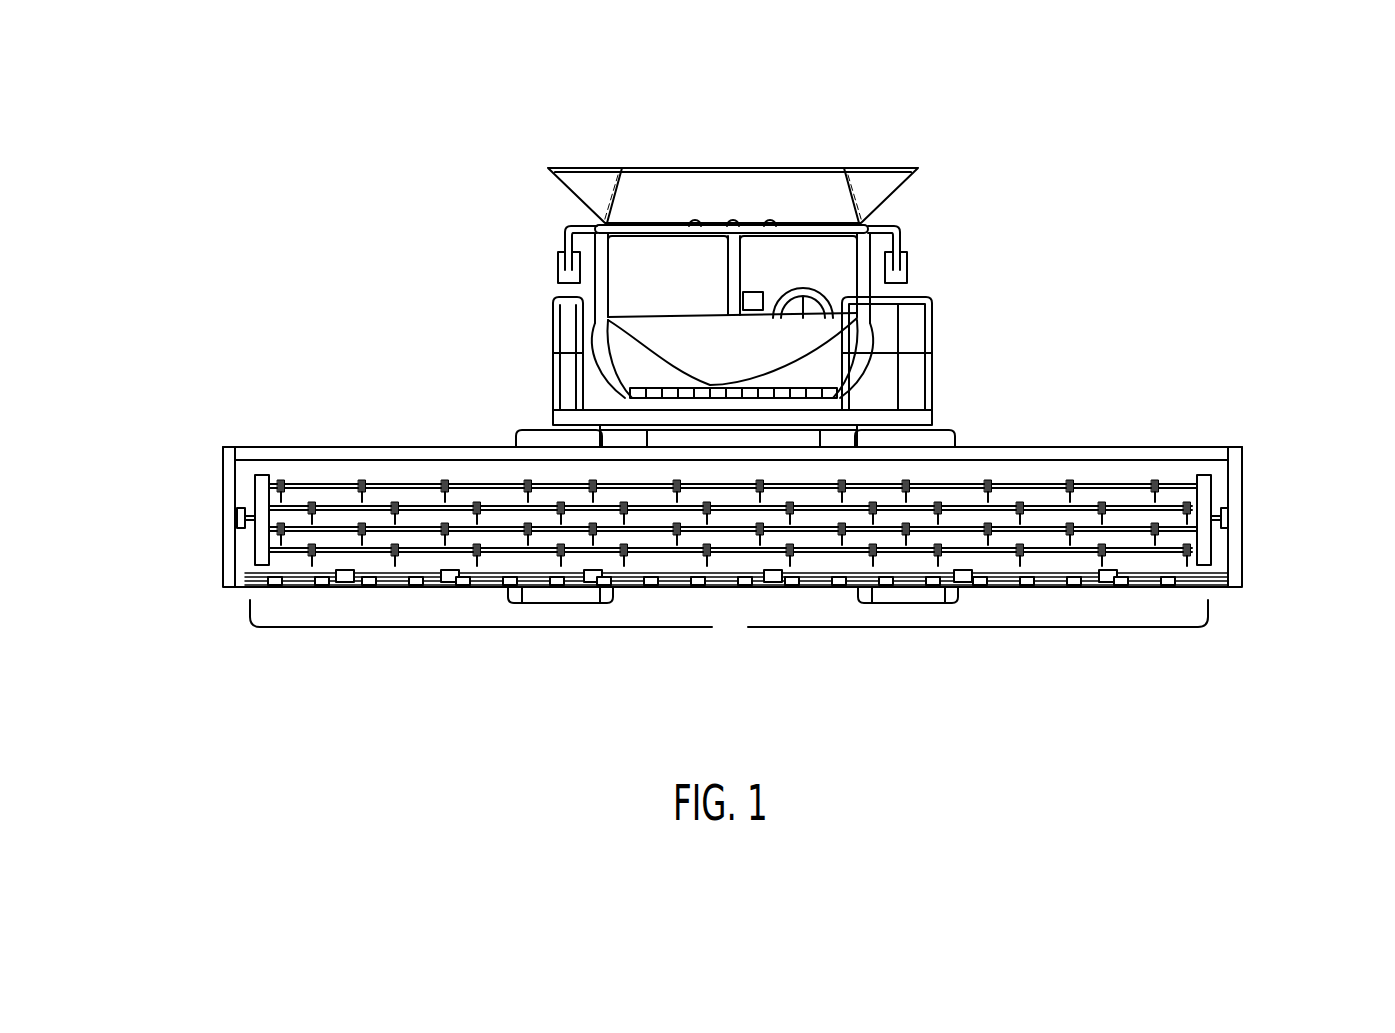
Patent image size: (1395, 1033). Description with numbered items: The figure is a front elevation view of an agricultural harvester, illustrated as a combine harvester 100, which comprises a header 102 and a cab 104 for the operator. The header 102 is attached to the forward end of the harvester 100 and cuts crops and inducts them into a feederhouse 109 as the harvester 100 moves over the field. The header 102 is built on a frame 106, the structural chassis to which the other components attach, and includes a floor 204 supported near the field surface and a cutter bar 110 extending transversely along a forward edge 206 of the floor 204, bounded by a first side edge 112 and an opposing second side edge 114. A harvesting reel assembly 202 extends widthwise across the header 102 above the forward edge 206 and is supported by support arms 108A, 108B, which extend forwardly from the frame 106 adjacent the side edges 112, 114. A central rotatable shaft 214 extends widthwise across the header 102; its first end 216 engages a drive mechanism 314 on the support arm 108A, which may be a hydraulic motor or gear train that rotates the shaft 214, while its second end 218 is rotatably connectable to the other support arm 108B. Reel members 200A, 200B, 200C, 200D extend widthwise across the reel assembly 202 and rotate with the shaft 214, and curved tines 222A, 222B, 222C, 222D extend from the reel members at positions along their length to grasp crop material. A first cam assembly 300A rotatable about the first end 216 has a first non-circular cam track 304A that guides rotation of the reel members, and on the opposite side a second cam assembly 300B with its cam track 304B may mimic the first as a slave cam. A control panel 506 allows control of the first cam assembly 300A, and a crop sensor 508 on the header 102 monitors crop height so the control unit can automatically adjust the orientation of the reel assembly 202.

The combine harvester 100 is at (390, 194).
The header 102 is at (1218, 415).
The cab 104 is at (863, 250).
The frame 106 is at (1104, 447).
The support arm 108A is at (222, 522).
The support arm 108B is at (1228, 512).
The feederhouse 109 is at (783, 438).
The cutter bar 110 is at (748, 627).
The first side edge 112 is at (222, 452).
The second side edge 114 is at (1242, 452).
The reel member 200A is at (362, 480).
The reel member 200B is at (410, 504).
The reel member 200C is at (388, 530).
The reel member 200D is at (407, 553).
The harvesting reel assembly 202 is at (1145, 582).
The floor 204 is at (860, 552).
The forward edge 206 is at (645, 584).
The central rotatable shaft 214 is at (253, 512).
The first end 216 is at (236, 550).
The second end 218 is at (1225, 530).
The tine 222A is at (514, 482).
The tine 222B is at (465, 504).
The tine 222C is at (517, 532).
The tine 222D is at (557, 553).
The first cam assembly 300A is at (232, 582).
The second cam assembly 300B is at (1218, 584).
The first non-circular cam track 304A is at (262, 555).
The cam track 304B is at (1207, 553).
The drive mechanism 314 is at (240, 535).
The control panel 506 is at (749, 292).
The crop sensor 508 is at (1112, 583).